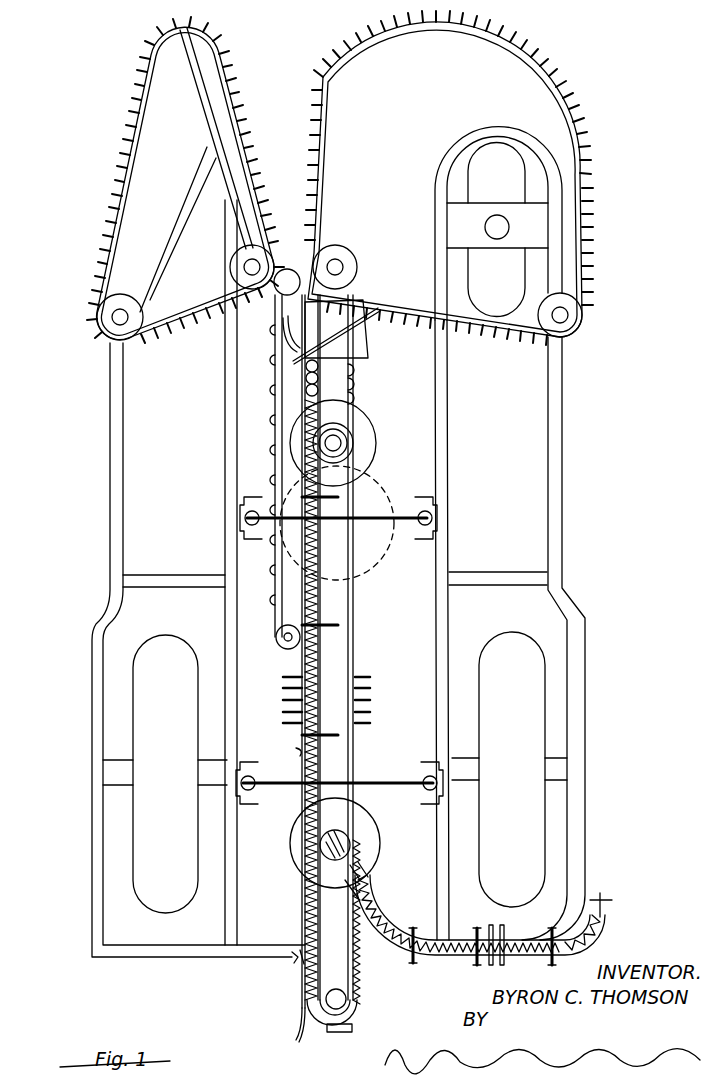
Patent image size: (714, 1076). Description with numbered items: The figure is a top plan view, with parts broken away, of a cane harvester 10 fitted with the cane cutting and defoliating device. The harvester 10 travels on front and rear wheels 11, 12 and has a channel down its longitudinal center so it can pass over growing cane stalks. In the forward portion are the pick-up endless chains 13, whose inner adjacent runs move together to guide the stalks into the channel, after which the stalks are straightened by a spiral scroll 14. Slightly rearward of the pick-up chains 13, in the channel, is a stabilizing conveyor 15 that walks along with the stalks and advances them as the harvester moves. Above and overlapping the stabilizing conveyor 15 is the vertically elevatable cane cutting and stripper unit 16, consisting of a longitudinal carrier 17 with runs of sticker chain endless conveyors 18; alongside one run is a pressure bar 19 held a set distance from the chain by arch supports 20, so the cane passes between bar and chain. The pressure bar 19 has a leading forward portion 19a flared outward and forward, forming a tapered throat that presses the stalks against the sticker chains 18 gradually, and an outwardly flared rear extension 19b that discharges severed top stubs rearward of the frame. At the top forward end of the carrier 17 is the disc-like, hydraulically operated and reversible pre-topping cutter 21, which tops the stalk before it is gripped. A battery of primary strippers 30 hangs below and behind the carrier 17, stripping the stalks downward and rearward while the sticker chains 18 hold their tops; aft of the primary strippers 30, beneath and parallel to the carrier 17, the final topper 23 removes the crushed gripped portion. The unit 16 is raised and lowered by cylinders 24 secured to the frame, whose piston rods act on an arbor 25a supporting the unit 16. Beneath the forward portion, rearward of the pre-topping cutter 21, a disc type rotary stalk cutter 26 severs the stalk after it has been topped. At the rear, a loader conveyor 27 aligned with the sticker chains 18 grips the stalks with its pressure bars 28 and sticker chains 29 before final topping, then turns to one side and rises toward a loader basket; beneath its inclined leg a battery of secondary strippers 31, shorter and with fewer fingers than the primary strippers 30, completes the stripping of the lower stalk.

The cane harvester 10 is at (566, 512).
The front wheels 11 is at (508, 273).
The rear wheels 12 is at (163, 843).
The pick-up endless chains 13 is at (238, 72).
The spiral scroll 14 is at (347, 345).
The stabilizing conveyor 15 is at (300, 360).
The cane cutting and stripper unit 16 is at (365, 659).
The longitudinal carrier 17 is at (337, 603).
The sticker chain endless conveyors 18 is at (312, 567).
The pressure bar 19 is at (305, 665).
The leading forward portion of pressure bar 19a is at (280, 325).
The outwardly flared rear extension of pressure bar 19b is at (298, 1040).
The arch supports 20 is at (340, 497).
The pre-topping cutter 21 is at (365, 446).
The final topper 23 is at (370, 848).
The cylinders 24 is at (437, 518).
The arbor 25a is at (350, 526).
The rotary stalk cutter 26 is at (378, 560).
The loader conveyor 27 is at (365, 892).
The pressure bars 28 is at (298, 752).
The sticker chains 29 is at (604, 905).
The primary strippers 30 is at (352, 700).
The secondary strippers 31 is at (500, 960).